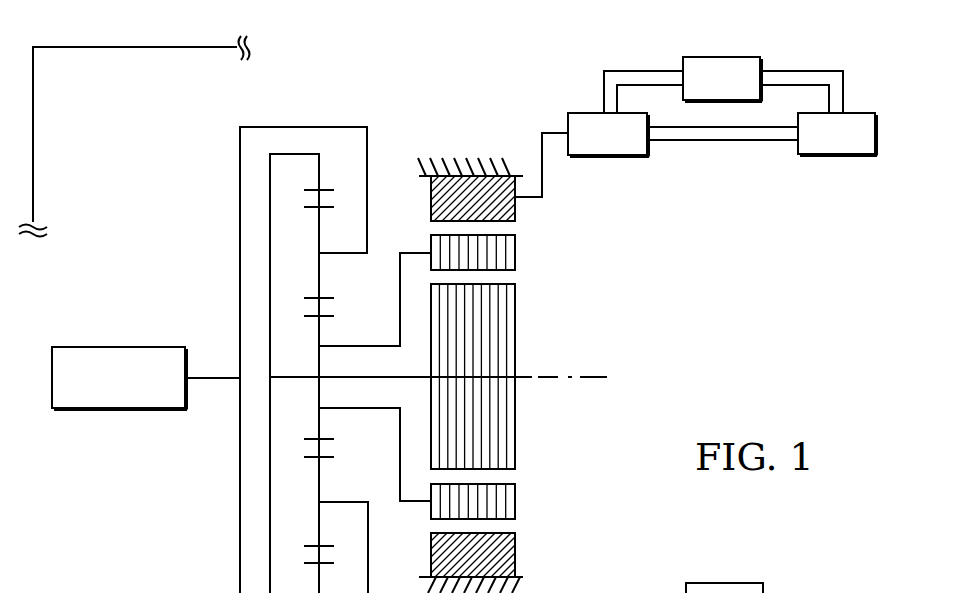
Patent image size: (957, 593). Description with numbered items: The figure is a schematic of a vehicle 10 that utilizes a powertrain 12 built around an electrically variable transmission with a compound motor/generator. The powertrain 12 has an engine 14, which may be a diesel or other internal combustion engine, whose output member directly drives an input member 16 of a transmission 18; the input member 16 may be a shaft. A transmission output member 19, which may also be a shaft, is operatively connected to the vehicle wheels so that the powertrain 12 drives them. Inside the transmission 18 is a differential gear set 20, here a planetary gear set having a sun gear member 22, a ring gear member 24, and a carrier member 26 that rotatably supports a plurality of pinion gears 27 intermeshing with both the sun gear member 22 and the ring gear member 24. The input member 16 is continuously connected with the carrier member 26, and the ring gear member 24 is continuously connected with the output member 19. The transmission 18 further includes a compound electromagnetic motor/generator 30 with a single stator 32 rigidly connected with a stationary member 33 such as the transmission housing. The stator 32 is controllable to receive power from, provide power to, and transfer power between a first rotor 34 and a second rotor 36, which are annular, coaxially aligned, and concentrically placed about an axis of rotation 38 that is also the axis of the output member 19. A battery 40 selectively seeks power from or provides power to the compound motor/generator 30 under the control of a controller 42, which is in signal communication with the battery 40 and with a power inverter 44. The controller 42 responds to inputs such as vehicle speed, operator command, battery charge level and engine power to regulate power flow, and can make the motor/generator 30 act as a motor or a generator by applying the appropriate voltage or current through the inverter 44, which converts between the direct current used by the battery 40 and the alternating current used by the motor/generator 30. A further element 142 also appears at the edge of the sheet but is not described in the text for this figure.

The vehicle 10 is at (152, 47).
The powertrain 12 is at (353, 68).
The engine 14 is at (138, 347).
The input member 16 is at (216, 378).
The transmission 18 is at (417, 92).
The transmission output member 19 is at (530, 376).
The differential gear set 20 is at (356, 460).
The sun gear member 22 is at (325, 318).
The ring gear member 24 is at (328, 188).
The carrier member 26 is at (348, 253).
The pinion gears 27 is at (318, 225).
The compound electromagnetic motor/generator 30 is at (594, 244).
The stator 32 is at (515, 208).
The stationary member 33 is at (450, 172).
The first rotor 34 is at (515, 334).
The second rotor 36 is at (515, 262).
The axis of rotation 38 is at (594, 378).
The battery 40 is at (838, 154).
The controller 42 is at (732, 57).
The power inverter 44 is at (590, 113).
The component of FIG. 2 142 is at (735, 583).